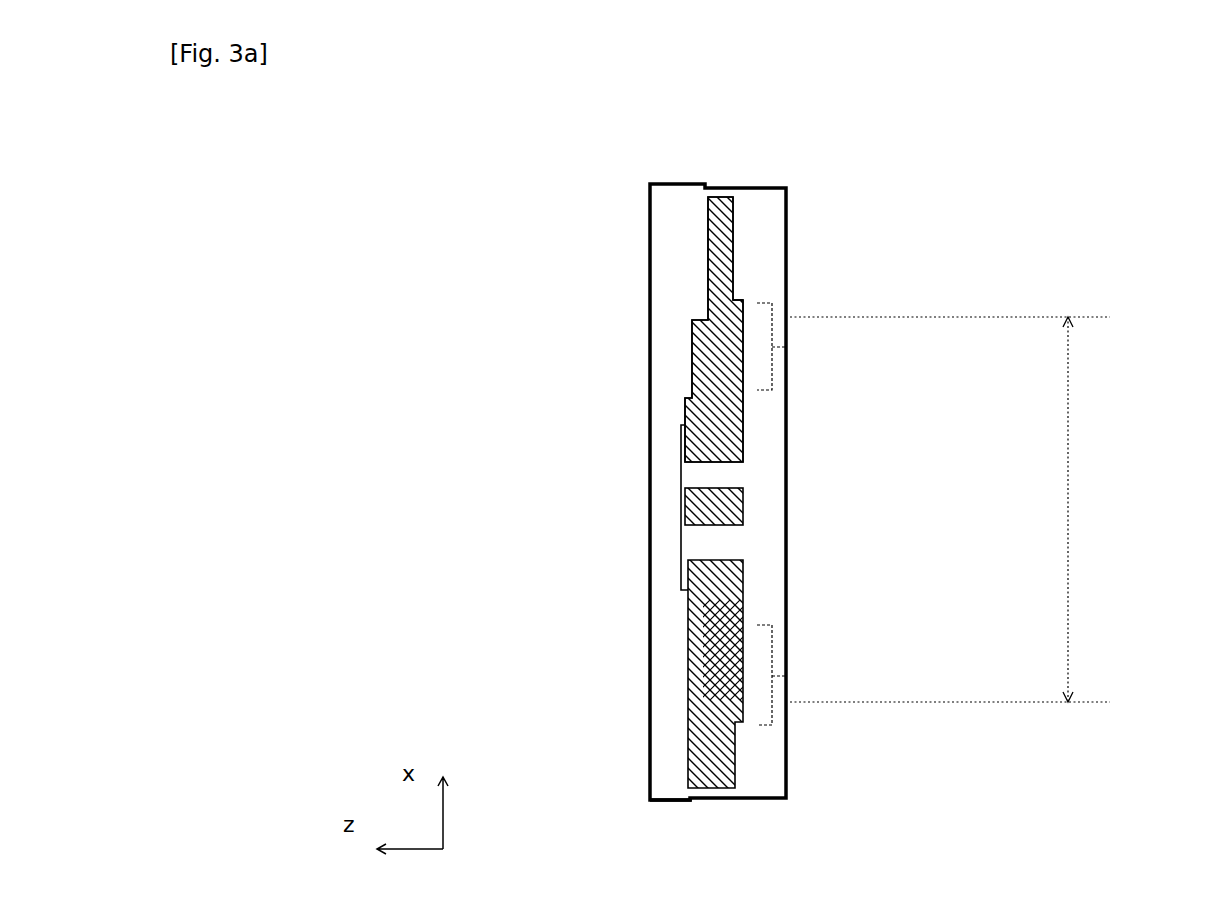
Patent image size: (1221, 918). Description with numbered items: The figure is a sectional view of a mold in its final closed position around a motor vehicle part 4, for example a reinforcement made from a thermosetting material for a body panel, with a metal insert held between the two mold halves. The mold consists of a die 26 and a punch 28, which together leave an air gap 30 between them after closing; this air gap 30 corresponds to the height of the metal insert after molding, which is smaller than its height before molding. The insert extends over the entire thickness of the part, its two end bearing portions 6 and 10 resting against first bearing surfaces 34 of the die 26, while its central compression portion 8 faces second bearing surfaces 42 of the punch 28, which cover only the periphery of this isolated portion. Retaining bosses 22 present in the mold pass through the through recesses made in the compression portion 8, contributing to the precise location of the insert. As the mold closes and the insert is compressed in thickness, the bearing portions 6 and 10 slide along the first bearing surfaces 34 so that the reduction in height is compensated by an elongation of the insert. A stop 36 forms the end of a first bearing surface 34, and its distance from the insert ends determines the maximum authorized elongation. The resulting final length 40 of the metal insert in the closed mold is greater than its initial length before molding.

The motor vehicle part 4 is at (690, 662).
The bearing portion 6 is at (745, 333).
The compression portion 8 is at (685, 512).
The bearing portion 10 is at (735, 668).
The retaining bosses 22 is at (694, 476).
The die 26 is at (772, 550).
The punch 28 is at (660, 788).
The air gap 30 is at (705, 340).
The first bearing surface 34 is at (778, 347).
The stop 36 is at (740, 300).
The final length 40 is at (1068, 512).
The second bearing surface 42 is at (688, 408).